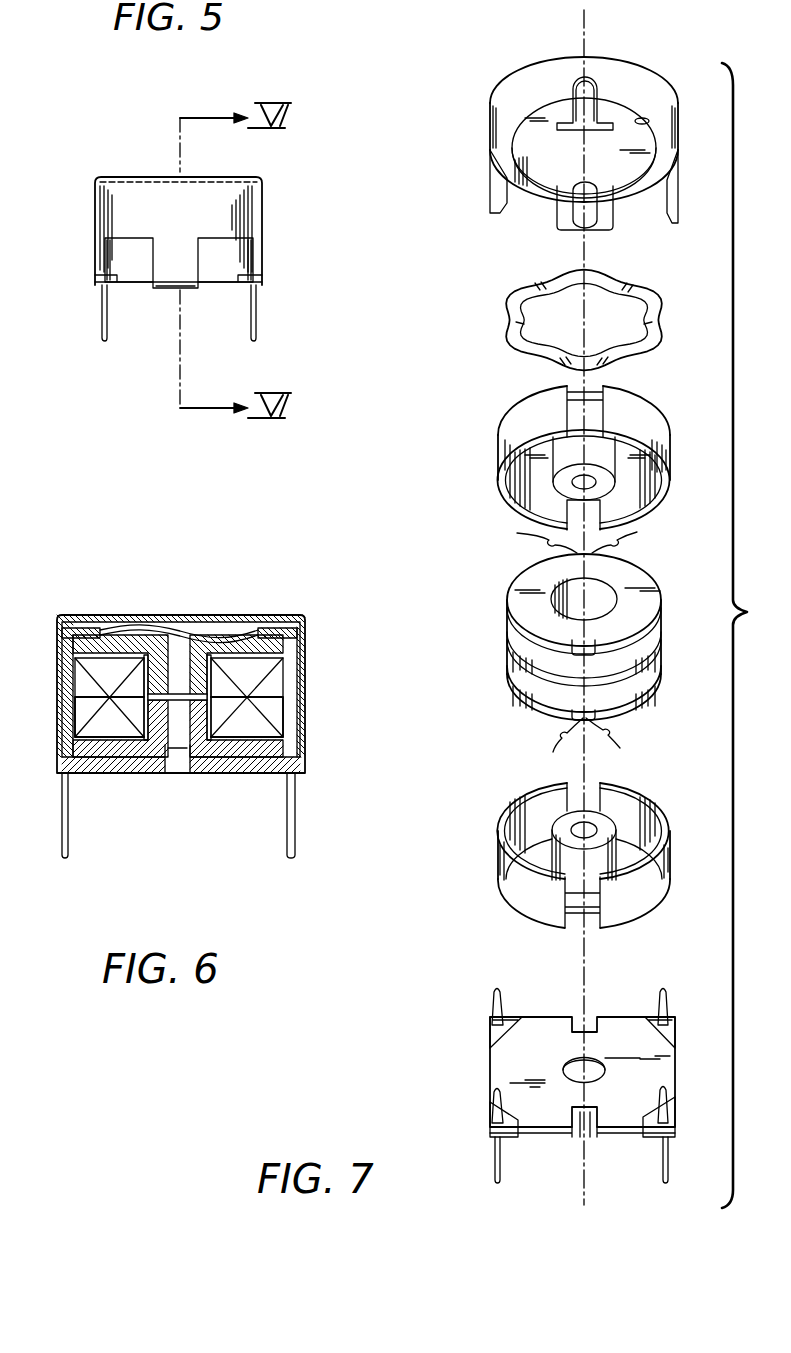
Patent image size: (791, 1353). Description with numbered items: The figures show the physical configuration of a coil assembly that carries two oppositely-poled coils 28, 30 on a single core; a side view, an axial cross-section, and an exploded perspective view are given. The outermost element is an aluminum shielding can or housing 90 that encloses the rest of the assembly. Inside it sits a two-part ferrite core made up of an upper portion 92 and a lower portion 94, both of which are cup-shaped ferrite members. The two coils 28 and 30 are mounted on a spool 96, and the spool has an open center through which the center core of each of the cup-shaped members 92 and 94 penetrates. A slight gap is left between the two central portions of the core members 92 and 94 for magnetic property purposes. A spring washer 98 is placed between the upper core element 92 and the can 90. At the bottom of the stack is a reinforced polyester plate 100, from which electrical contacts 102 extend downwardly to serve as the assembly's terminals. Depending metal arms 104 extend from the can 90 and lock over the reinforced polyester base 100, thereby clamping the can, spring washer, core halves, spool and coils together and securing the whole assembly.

In FIG. 6, the coil 28 is at (277, 683).
In FIG. 7, the coil 28 is at (527, 641).
In FIG. 6, the coil 30 is at (270, 717).
In FIG. 7, the coil 30 is at (535, 688).
In FIG. 5, the shielding can 90 is at (236, 203).
In FIG. 6, the shielding can 90 is at (218, 615).
In FIG. 7, the shielding can 90 is at (635, 95).
In FIG. 6, the upper core portion 92 is at (118, 643).
In FIG. 7, the upper core portion 92 is at (527, 423).
In FIG. 5, the lower core portion 94 is at (222, 262).
In FIG. 6, the lower core portion 94 is at (150, 752).
In FIG. 7, the lower core portion 94 is at (525, 905).
In FIG. 6, the spool 96 is at (290, 686).
In FIG. 7, the spool 96 is at (533, 577).
In FIG. 6, the spring washer 98 is at (277, 628).
In FIG. 7, the spring washer 98 is at (503, 322).
In FIG. 6, the reinforced polyester plate 100 is at (237, 770).
In FIG. 7, the reinforced polyester plate 100 is at (511, 1063).
In FIG. 5, the electrical contacts 102 is at (103, 325).
In FIG. 7, the electrical contacts 102 is at (495, 1160).
In FIG. 5, the depending metal arms 104 is at (178, 290).
In FIG. 7, the depending metal arms 104 is at (495, 200).